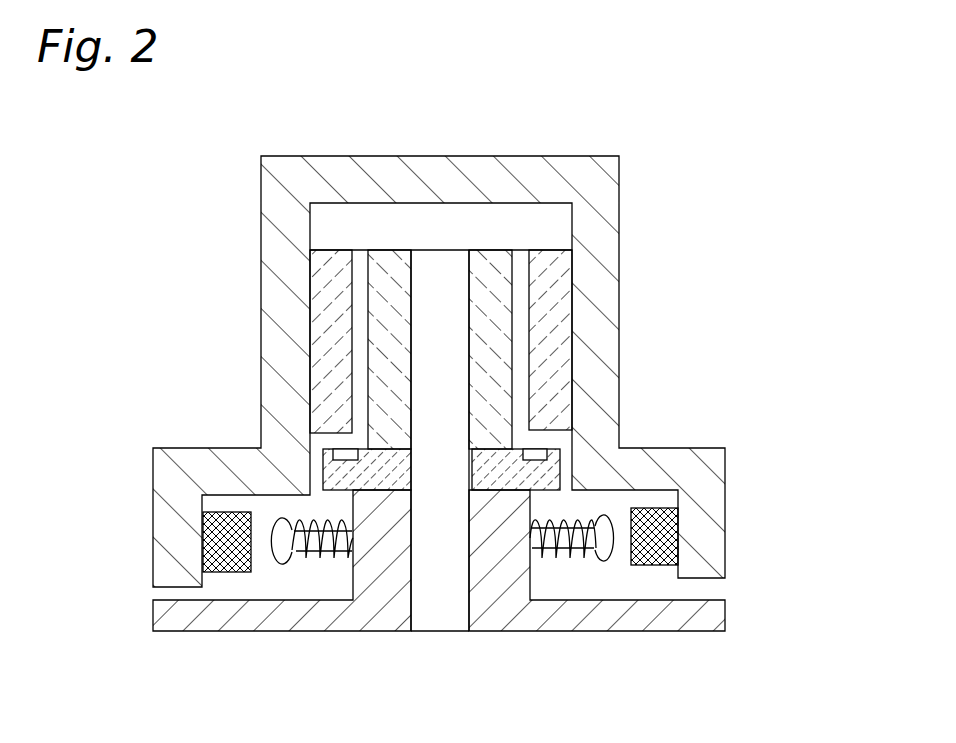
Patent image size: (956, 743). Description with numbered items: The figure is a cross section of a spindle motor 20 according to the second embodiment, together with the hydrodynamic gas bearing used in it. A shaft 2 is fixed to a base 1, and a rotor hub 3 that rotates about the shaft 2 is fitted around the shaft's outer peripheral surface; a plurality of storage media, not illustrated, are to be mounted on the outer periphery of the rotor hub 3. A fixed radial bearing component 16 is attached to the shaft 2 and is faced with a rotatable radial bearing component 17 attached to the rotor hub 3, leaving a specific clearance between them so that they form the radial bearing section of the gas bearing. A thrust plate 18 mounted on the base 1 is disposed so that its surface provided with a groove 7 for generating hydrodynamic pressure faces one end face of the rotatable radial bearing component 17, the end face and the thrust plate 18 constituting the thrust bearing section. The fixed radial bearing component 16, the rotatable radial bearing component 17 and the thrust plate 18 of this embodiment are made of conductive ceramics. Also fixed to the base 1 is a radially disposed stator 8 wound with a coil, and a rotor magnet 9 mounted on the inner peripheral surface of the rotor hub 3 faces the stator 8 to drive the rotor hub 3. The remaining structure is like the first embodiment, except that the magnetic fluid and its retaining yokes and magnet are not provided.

The spindle motor 20 is at (580, 125).
The rotor hub 3 is at (273, 230).
The base 1 is at (384, 604).
The shaft 2 is at (441, 604).
The fixed radial bearing component 16 is at (380, 292).
The rotatable radial bearing component 17 is at (330, 350).
The thrust plate 18 is at (317, 475).
The groove 7 is at (312, 447).
The rotor magnet 9 is at (218, 572).
The stator 8 is at (283, 562).